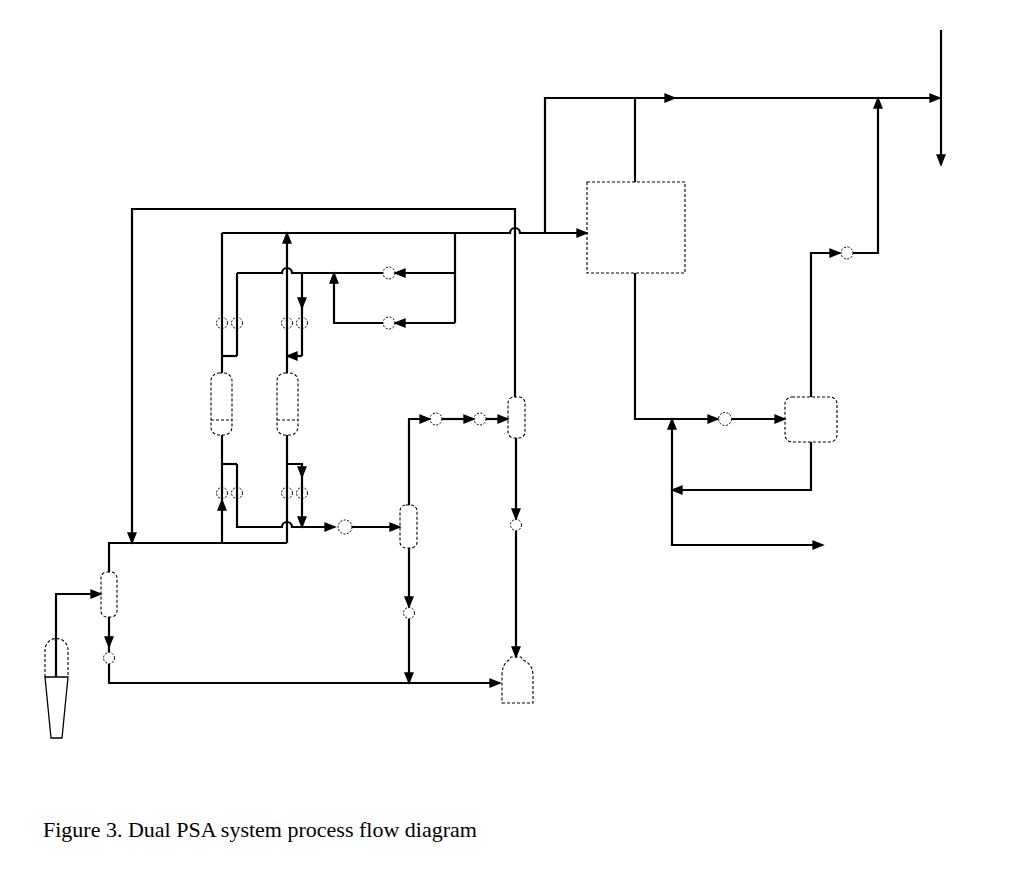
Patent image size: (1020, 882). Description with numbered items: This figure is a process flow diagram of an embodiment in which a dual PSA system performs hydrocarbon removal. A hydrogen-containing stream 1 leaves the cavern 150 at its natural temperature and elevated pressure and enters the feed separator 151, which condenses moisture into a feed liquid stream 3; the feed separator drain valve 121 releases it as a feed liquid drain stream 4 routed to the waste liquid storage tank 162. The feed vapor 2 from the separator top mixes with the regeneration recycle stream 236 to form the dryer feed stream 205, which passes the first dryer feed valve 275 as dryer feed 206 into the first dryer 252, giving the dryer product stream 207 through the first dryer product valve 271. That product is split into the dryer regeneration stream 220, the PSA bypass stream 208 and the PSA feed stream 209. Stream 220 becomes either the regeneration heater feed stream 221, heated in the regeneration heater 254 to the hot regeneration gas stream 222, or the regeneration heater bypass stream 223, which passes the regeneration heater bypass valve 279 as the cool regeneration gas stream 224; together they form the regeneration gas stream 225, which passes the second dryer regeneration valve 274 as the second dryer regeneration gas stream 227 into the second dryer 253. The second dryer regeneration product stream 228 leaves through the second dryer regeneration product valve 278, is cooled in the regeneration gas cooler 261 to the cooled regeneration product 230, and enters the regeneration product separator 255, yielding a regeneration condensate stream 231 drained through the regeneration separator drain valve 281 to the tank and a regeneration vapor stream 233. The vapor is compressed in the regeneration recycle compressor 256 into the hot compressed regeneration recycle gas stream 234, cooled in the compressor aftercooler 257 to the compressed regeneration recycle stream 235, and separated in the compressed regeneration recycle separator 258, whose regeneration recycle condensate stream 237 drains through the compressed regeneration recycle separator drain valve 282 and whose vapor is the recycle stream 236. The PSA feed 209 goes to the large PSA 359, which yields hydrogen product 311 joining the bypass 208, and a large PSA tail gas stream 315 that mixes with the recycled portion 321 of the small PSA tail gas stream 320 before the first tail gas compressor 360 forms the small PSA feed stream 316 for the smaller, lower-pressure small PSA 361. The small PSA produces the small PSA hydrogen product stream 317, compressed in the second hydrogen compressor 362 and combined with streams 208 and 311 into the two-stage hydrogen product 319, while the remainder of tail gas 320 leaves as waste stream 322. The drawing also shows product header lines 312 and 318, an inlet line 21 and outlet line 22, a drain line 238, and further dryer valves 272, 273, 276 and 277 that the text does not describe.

The hydrogen-containing stream 1 is at (78, 628).
The feed vapor 2 is at (117, 551).
The feed liquid stream 3 is at (114, 632).
The feed liquid drain stream 4 is at (304, 675).
The product stream inlet 21 is at (952, 64).
The product stream outlet 22 is at (950, 131).
The feed separator drain valve 121 is at (120, 656).
The cavern 150 is at (57, 699).
The feed separator 151 is at (110, 594).
The waste liquid storage tank 162 is at (517, 680).
The dryer feed stream 205 is at (209, 552).
The dryer feed stream 206 is at (218, 466).
The dryer product stream 207 is at (218, 357).
The PSA bypass stream 208 is at (610, 159).
The PSA feed stream 209 is at (404, 226).
The dryer regeneration stream 220 is at (467, 278).
The regeneration heater feed stream 221 is at (425, 266).
The hot regeneration gas stream 222 is at (310, 264).
The regeneration heater bypass stream 223 is at (425, 317).
The cool regeneration gas stream 224 is at (356, 298).
The regeneration gas stream 225 is at (303, 303).
The second dryer regeneration gas stream 227 is at (305, 348).
The second dryer regeneration product stream 228 is at (305, 488).
The cooled regeneration product 230 is at (376, 520).
The regeneration condensate stream 231 is at (418, 577).
The regeneration vapor stream 233 is at (420, 460).
The hot compressed regeneration recycle gas stream 234 is at (457, 427).
The compressed regeneration recycle stream 235 is at (496, 427).
The regeneration recycle stream 236 is at (334, 376).
The regeneration recycle condensate stream 237 is at (526, 478).
The line to vessel 162 238 is at (526, 594).
The first dryer 252 is at (221, 404).
The second dryer 253 is at (287, 404).
The regeneration heater 254 is at (389, 283).
The regeneration product separator 255 is at (410, 526).
The regeneration recycle compressor 256 is at (436, 412).
The compressor aftercooler 257 is at (481, 412).
The compressed regeneration recycle separator 258 is at (517, 417).
The regeneration gas cooler 261 is at (345, 538).
The first dryer product valve 271 is at (214, 303).
The valve 272 is at (246, 314).
The valve 273 is at (278, 325).
The second dryer regeneration valve 274 is at (311, 314).
The first dryer feed valve 275 is at (214, 489).
The valve 276 is at (284, 497).
The valve 277 is at (278, 489).
The second dryer regeneration product valve 278 is at (311, 495).
The regeneration heater bypass valve 279 is at (389, 332).
The regeneration separator drain valve 281 is at (419, 646).
The compressed regeneration recycle separator drain valve 282 is at (526, 526).
The hydrogen product 311 is at (647, 140).
The product line 312 is at (807, 93).
The large PSA tail gas stream 315 is at (676, 348).
The small PSA feed stream 316 is at (758, 413).
The small PSA hydrogen product stream 317 is at (817, 323).
The line from valve 362 318 is at (867, 175).
The two-stage hydrogen product 319 is at (919, 91).
The small PSA tail gas stream 320 is at (741, 468).
The portion of small PSA tail gas stream 321 is at (681, 454).
The waste stream 322 is at (747, 519).
The large PSA 359 is at (636, 227).
The first tail gas compressor 360 is at (725, 411).
The small PSA 361 is at (811, 419).
The second hydrogen compressor 362 is at (847, 245).